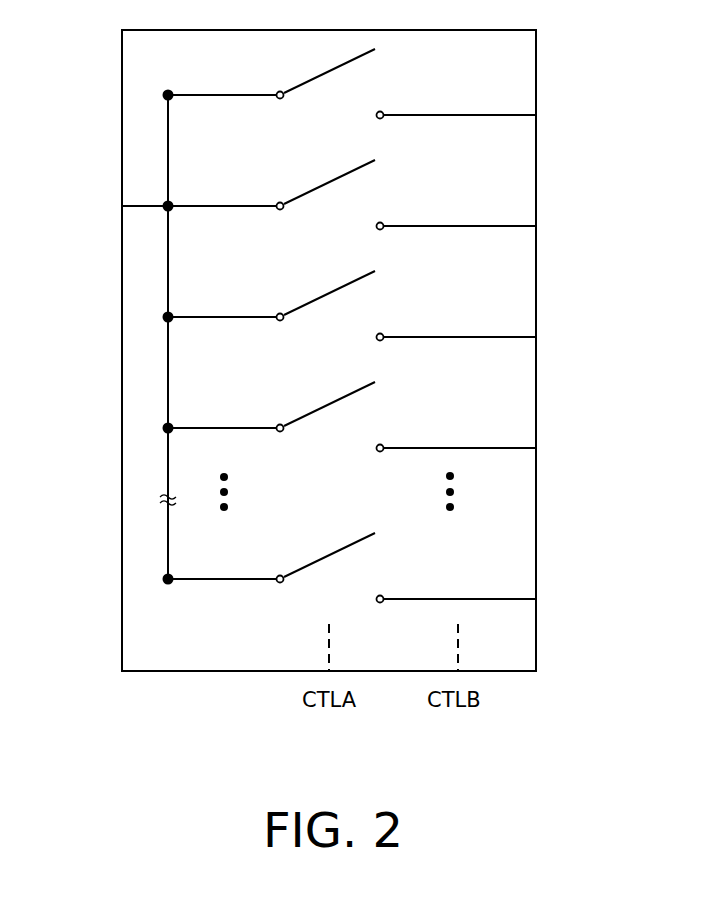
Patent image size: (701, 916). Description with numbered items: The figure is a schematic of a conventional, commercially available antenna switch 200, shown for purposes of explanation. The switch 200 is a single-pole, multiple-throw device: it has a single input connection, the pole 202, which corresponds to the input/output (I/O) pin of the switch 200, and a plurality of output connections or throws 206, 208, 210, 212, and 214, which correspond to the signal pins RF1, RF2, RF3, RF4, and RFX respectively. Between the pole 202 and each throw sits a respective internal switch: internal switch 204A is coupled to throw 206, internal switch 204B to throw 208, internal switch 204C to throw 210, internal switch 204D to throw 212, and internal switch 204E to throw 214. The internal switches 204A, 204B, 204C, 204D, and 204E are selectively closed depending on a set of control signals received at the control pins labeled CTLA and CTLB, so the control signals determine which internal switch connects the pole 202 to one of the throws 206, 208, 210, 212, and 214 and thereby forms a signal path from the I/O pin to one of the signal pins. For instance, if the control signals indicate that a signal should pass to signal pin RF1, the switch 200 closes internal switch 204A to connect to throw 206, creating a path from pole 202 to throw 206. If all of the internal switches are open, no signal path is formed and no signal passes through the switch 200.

The antenna switch 200 is at (157, 29).
The pole 202 is at (146, 205).
The internal switch 204A is at (392, 103).
The internal switch 204B is at (392, 214).
The internal switch 204C is at (392, 325).
The internal switch 204D is at (392, 436).
The internal switch 204E is at (392, 587).
The throw 206 is at (459, 113).
The throw 208 is at (459, 224).
The throw 210 is at (459, 335).
The throw 212 is at (459, 446).
The throw 214 is at (459, 597).